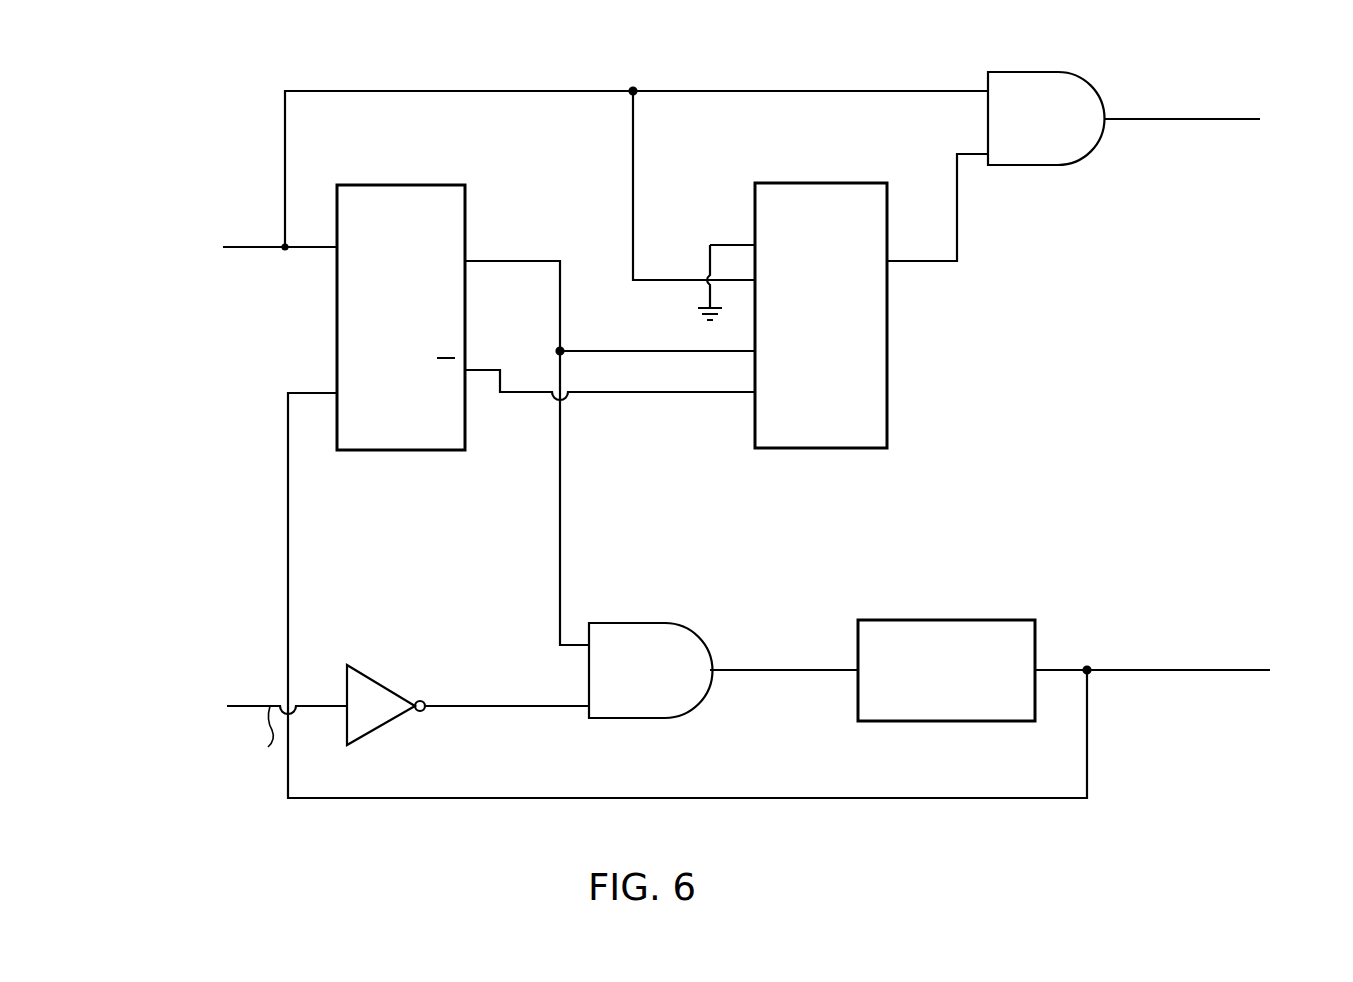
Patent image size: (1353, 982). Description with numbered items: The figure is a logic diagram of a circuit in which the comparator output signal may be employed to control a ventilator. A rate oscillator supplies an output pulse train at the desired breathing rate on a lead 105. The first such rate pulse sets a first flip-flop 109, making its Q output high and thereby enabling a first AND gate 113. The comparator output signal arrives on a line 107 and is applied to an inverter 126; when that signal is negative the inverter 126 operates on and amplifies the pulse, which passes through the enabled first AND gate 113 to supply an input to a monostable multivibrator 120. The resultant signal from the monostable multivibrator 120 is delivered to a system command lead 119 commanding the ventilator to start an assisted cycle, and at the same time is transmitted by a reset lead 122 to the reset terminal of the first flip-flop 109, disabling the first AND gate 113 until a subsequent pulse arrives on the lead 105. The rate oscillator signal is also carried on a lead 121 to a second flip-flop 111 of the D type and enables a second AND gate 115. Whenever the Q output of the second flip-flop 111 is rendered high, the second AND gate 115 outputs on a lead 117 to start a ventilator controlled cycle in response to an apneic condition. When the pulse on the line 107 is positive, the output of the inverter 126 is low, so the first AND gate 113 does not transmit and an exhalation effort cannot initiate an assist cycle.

The lead 105 is at (251, 246).
The line 107 is at (247, 706).
The first flip-flop 109 is at (430, 185).
The second flip-flop 111 is at (824, 183).
The first AND gate 113 is at (640, 623).
The second AND gate 115 is at (1060, 165).
The controlled cycle output lead 117 is at (1145, 119).
The system command lead 119 is at (1139, 670).
The monostable multivibrator 120 is at (950, 620).
The lead 121 is at (523, 91).
The reset lead 122 is at (786, 798).
The inverter 126 is at (404, 700).